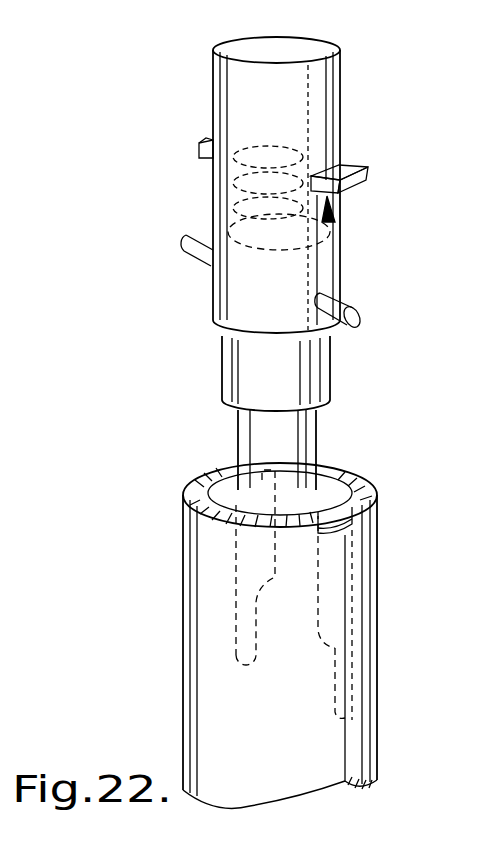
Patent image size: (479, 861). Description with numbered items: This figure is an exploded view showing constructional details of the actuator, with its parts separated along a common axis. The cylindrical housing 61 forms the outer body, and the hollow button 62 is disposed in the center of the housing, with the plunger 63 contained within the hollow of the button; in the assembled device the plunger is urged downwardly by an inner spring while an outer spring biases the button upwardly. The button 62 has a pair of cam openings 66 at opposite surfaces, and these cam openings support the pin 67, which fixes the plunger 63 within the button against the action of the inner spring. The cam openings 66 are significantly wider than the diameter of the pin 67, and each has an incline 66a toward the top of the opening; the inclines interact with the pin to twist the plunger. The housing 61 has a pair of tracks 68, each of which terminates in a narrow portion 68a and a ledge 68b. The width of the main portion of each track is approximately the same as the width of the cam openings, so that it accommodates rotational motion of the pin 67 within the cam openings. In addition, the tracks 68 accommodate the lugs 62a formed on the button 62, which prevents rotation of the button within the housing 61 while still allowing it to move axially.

The cylindrical housing 61 is at (184, 620).
The hollow button 62 is at (342, 87).
The lugs 62a is at (199, 150).
The plunger 63 is at (290, 492).
The cam openings 66 is at (342, 273).
The incline 66a is at (330, 215).
The pin 67 is at (360, 318).
The tracks 68 is at (378, 553).
The narrow portion 68a is at (345, 687).
The ledge 68b is at (325, 638).